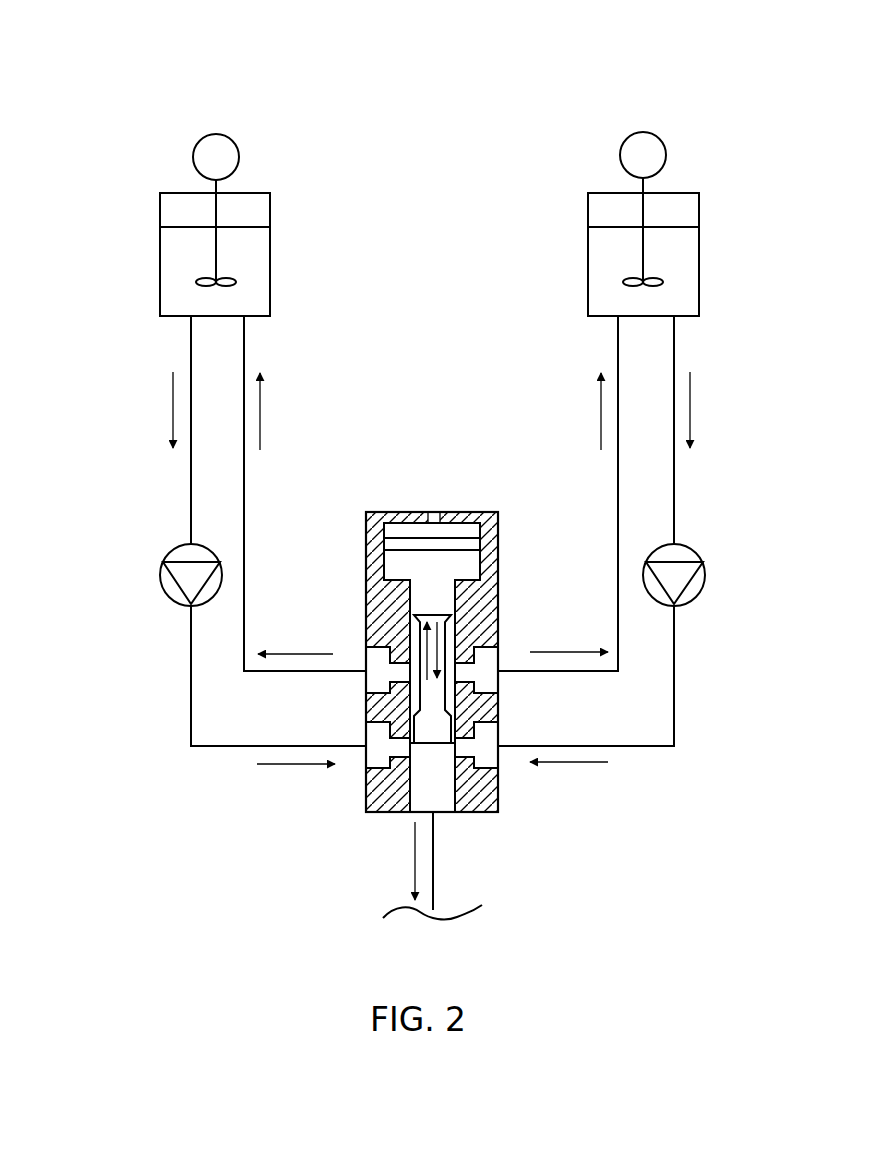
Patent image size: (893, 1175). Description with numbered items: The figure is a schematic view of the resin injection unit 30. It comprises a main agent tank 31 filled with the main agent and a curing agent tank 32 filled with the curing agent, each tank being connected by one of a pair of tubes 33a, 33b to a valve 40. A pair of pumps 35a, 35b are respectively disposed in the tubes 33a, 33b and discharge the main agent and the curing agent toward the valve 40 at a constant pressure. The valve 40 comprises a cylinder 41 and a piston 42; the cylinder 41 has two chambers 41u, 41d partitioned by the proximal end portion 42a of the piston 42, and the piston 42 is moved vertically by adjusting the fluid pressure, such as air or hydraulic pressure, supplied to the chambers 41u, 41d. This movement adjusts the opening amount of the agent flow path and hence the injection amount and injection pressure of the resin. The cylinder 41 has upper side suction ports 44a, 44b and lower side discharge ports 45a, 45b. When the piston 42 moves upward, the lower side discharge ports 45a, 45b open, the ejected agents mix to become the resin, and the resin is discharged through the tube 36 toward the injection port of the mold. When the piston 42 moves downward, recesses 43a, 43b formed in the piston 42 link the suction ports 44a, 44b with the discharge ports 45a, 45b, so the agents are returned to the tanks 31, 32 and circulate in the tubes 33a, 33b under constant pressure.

The resin injection unit 30 is at (55, 46).
The main agent tank 31 is at (175, 208).
The curing agent tank 32 is at (600, 206).
The tube 33a is at (245, 338).
The tube 33b is at (674, 338).
The pump 35a is at (161, 565).
The pump 35b is at (705, 565).
The tube 36 is at (435, 859).
The valve 40 is at (432, 617).
The cylinder 41 is at (432, 622).
The chamber 41u is at (431, 512).
The chamber 41d is at (470, 580).
The piston 42 is at (470, 583).
The proximal end portion 42a is at (452, 547).
The recess 43a is at (367, 710).
The recess 43b is at (498, 705).
The upper side suction port 44a is at (367, 650).
The upper side suction port 44b is at (498, 652).
The lower side discharge port 45a is at (367, 736).
The lower side discharge port 45b is at (498, 733).